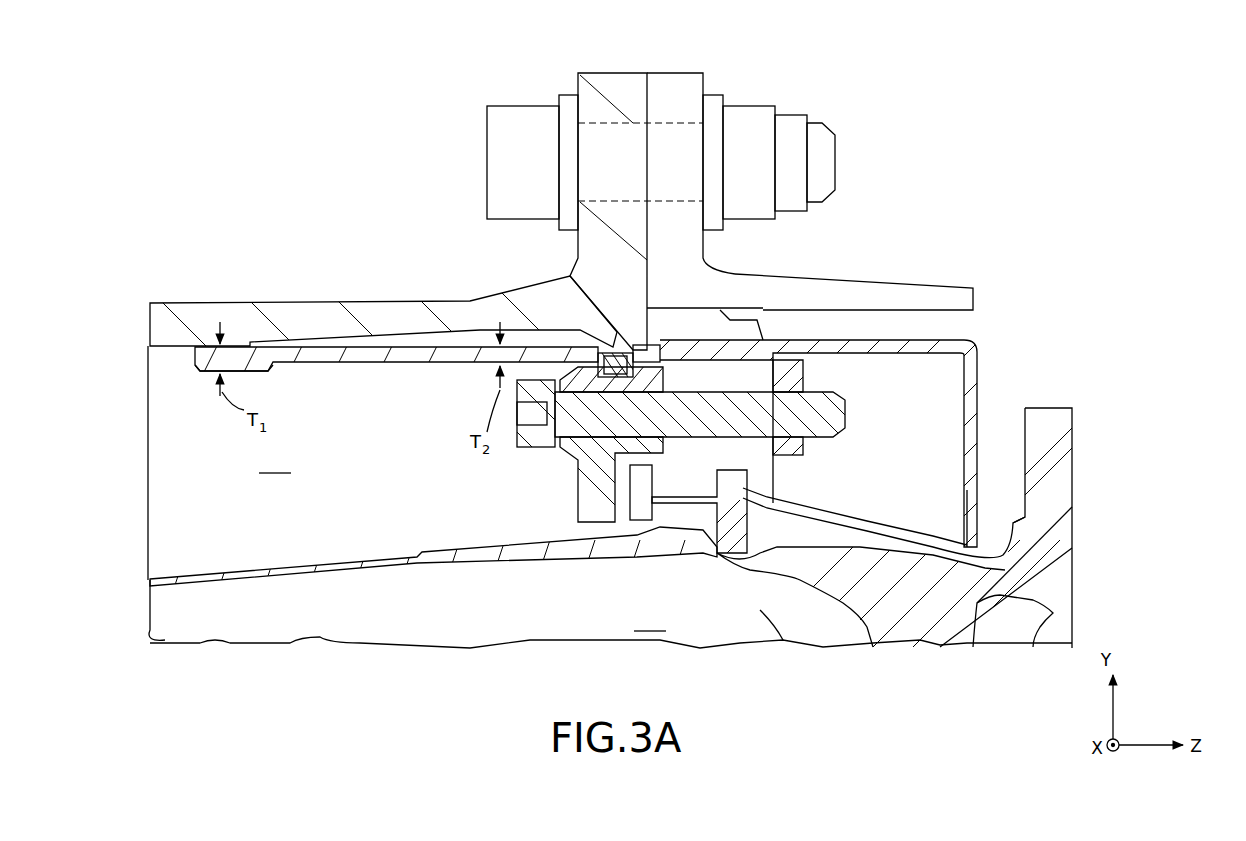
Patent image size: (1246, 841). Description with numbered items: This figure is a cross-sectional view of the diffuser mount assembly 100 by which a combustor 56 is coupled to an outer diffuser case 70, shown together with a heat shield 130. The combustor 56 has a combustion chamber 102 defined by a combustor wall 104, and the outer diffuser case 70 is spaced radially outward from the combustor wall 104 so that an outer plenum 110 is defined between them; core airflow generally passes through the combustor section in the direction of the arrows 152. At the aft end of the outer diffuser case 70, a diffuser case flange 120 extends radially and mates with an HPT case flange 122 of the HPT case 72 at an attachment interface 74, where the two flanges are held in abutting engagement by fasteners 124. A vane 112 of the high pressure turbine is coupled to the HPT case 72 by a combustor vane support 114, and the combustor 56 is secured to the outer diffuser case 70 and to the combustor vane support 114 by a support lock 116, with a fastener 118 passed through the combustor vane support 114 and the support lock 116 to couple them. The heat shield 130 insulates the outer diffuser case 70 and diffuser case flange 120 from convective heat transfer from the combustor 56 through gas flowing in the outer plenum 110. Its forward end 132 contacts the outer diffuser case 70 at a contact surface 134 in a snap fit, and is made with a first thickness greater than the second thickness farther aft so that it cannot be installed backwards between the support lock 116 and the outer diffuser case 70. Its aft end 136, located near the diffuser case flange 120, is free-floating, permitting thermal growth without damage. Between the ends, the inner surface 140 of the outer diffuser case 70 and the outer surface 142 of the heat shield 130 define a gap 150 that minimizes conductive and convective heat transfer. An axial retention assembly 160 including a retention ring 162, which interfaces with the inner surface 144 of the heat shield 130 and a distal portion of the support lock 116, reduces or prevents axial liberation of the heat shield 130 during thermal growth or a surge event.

The diffuser mount assembly 100 is at (232, 143).
The outer diffuser case 70 is at (193, 303).
The HPT case 72 is at (935, 278).
The attachment interface 74 is at (642, 58).
The diffuser case flange 120 is at (593, 85).
The HPT case flange 122 is at (685, 88).
The fastener 124 is at (497, 128).
The axial retention assembly 160 is at (620, 318).
The retention ring 162 is at (612, 350).
The aft end 136 is at (652, 343).
The combustor vane support 114 is at (972, 373).
The fastener 118 is at (836, 413).
The support lock 116 is at (597, 497).
The heat shield 130 is at (302, 363).
The forward end 132 is at (190, 350).
The contact surface 134 is at (235, 345).
The inner surface 140 is at (405, 322).
The outer surface 142 is at (447, 348).
The inner surface 144 is at (483, 364).
The gap 150 is at (473, 345).
The outer plenum 110 is at (275, 462).
The arrows 152 is at (260, 526).
The combustor wall 104 is at (150, 581).
The combustion chamber 102 is at (665, 470).
The vane 112 is at (937, 633).
The combustor 56 is at (240, 630).